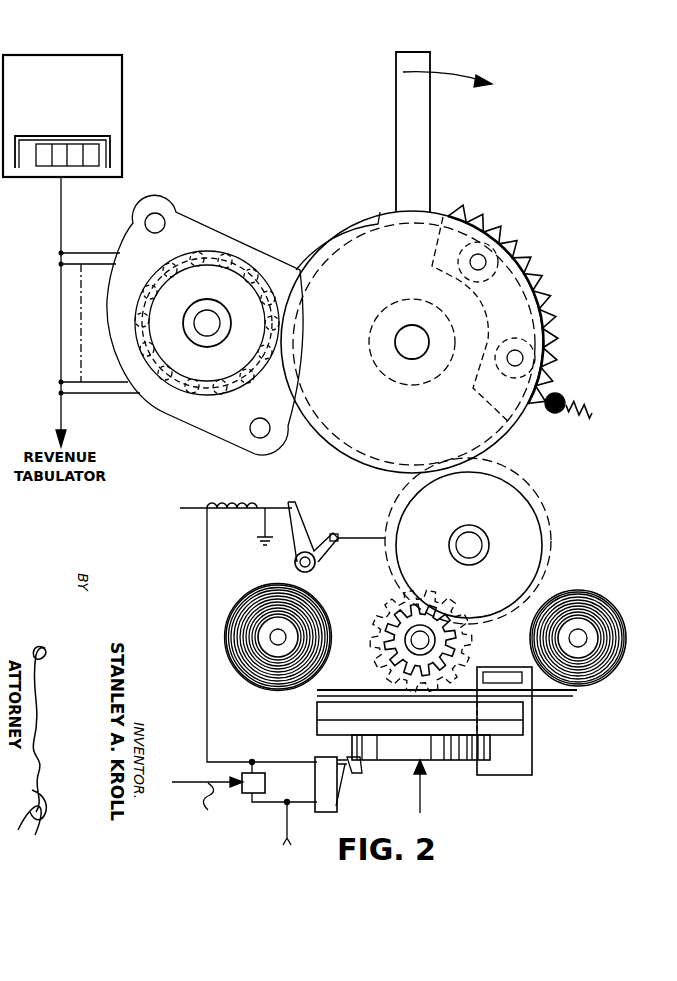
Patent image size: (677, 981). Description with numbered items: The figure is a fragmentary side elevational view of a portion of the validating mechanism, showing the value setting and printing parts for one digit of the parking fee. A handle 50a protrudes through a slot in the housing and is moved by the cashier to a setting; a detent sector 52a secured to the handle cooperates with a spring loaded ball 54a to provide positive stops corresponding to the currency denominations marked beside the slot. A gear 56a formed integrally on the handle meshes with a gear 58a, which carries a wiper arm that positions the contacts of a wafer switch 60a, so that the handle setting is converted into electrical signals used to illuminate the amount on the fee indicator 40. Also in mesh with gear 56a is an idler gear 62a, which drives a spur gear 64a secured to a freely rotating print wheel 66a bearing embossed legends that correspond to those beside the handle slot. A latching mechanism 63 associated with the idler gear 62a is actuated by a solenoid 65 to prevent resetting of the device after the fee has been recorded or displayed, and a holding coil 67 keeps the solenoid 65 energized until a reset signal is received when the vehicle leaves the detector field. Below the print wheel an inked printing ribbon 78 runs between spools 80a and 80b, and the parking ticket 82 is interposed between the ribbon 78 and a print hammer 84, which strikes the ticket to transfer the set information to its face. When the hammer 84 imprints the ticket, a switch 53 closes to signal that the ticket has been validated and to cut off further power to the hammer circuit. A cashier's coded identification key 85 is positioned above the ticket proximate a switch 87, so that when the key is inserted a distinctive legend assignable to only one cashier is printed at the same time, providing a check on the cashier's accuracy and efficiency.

The fee indicator 40 is at (122, 127).
The handle 50a is at (420, 155).
The detent sector 52a is at (550, 310).
The spring loaded ball 54a is at (553, 397).
The gear 56a is at (556, 346).
The gear 58a is at (190, 251).
The wafer switch 60a is at (180, 203).
The idler gear 62a is at (552, 543).
The latching mechanism 63 is at (353, 533).
The spur gear 64a is at (467, 642).
The solenoid 65 is at (242, 503).
The print wheel 66a is at (373, 647).
The holding coil 67 is at (265, 783).
The inked printing ribbon 78 is at (307, 687).
The spool 80a is at (320, 607).
The spool 80b is at (613, 647).
The parking ticket 82 is at (575, 695).
The print hammer 84 is at (523, 732).
The cashier's coded identification key 85 is at (503, 673).
The switch 87 is at (520, 765).
The switch 53 is at (337, 803).